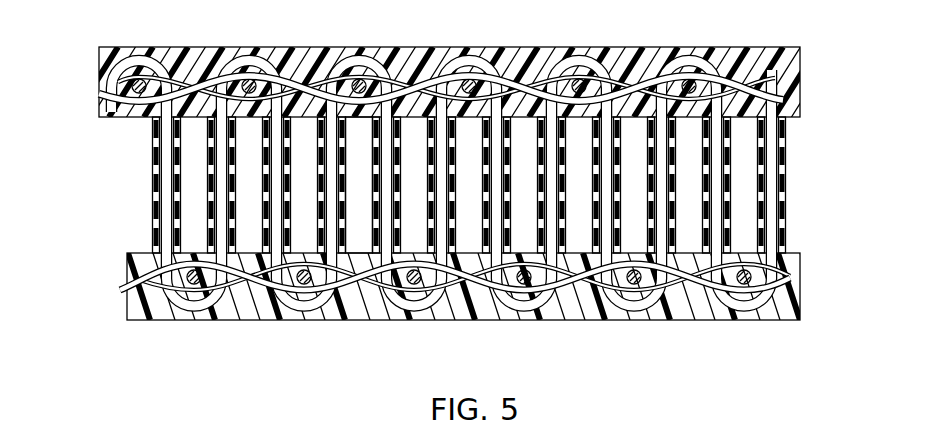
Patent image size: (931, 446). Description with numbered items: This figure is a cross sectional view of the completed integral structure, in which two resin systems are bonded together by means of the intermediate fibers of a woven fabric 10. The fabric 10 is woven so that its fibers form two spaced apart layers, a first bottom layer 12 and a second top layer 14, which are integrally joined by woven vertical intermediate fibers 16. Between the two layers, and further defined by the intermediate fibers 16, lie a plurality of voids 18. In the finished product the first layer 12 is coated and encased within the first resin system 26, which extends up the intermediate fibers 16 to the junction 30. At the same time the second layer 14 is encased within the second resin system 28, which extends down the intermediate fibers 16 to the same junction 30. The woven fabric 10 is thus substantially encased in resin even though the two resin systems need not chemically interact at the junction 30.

The fabric 10 is at (461, 31).
The first bottom layer 12 is at (120, 291).
The second top layer 14 is at (99, 91).
The intermediate fibers 16 is at (163, 205).
The voids 18 is at (363, 132).
The first resin system 26 is at (802, 272).
The second resin system 28 is at (793, 92).
The junction 30 is at (764, 182).